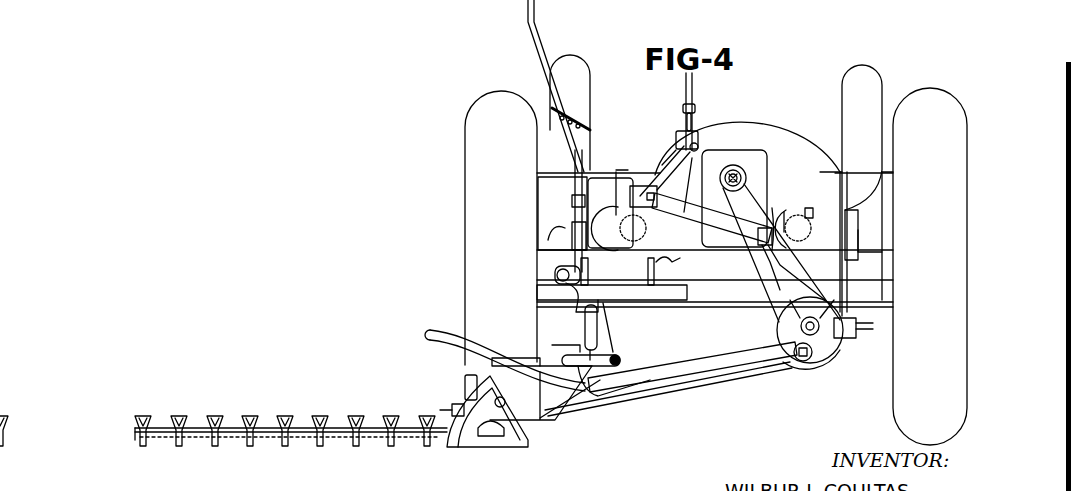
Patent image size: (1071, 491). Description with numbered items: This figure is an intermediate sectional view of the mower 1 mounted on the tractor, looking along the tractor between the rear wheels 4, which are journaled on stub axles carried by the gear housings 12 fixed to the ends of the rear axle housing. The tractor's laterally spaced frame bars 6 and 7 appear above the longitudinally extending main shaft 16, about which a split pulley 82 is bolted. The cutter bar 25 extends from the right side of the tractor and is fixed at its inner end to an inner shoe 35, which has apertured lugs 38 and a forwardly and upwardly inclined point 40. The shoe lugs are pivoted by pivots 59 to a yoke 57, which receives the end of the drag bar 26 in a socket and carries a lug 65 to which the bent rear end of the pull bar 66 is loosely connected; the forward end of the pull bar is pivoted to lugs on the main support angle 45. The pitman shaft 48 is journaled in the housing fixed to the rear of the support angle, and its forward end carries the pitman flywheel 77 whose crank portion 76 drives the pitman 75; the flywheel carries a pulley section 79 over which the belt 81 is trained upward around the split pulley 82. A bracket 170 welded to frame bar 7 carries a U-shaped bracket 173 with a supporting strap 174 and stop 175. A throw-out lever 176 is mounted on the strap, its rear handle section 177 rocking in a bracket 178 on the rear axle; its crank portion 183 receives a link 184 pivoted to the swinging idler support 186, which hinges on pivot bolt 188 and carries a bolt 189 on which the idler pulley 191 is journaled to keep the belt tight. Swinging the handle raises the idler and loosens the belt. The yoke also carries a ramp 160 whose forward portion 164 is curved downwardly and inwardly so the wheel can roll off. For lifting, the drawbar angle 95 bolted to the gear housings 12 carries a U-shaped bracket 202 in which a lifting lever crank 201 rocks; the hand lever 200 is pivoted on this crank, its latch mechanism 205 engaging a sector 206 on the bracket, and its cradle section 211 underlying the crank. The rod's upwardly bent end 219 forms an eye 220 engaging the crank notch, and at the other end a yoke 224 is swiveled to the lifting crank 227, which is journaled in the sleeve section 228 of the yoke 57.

The mower 1 is at (570, 414).
The rear wheels 4 is at (478, 218).
The frame bar 6 is at (794, 219).
The frame bar 7 is at (648, 228).
The gear housings 12 is at (540, 268).
The main shaft 16 is at (732, 226).
The cutter bar 25 is at (278, 416).
The drag bar 26 is at (740, 350).
The inner shoe 35 is at (464, 446).
The apertured lugs 38 is at (446, 412).
The point 40 is at (512, 445).
The main support angle 45 is at (848, 340).
The pitman shaft 48 is at (810, 330).
The yoke 57 is at (560, 410).
The pivots 59 is at (464, 388).
The lug 65 is at (585, 390).
The pull bar 66 is at (612, 356).
The pitman 75 is at (695, 372).
The crank portion 76 is at (805, 362).
The pitman flywheel 77 is at (820, 370).
The pulley section 79 is at (796, 298).
The belt 81 is at (740, 265).
The split pulley 82 is at (738, 172).
The drawbar angle 95 is at (684, 292).
The ramp 160 is at (540, 428).
The forward portion 164 is at (528, 368).
The bracket 170 is at (628, 192).
The U-shaped bracket 173 is at (630, 172).
The supporting strap 174 is at (664, 160).
The stop 175 is at (712, 210).
The throw-out lever 176 is at (684, 96).
The handle section 177 is at (695, 80).
The bracket 178 is at (696, 112).
The crank portion 183 is at (676, 138).
The link 184 is at (699, 146).
The idler support 186 is at (700, 226).
The pivot bolt 188 is at (660, 170).
The bolt 189 is at (780, 204).
The idler pulley 191 is at (782, 210).
The hand lever 200 is at (572, 188).
The lifting lever crank 201 is at (655, 292).
The U-shaped bracket 202 is at (636, 307).
The latch mechanism 205 is at (570, 205).
The sector 206 is at (548, 238).
The cradle section 211 is at (553, 275).
The upwardly bent end 219 is at (598, 292).
The eye 220 is at (580, 302).
The yoke 224 is at (609, 328).
The lifting crank 227 is at (583, 355).
The sleeve section 228 is at (540, 342).